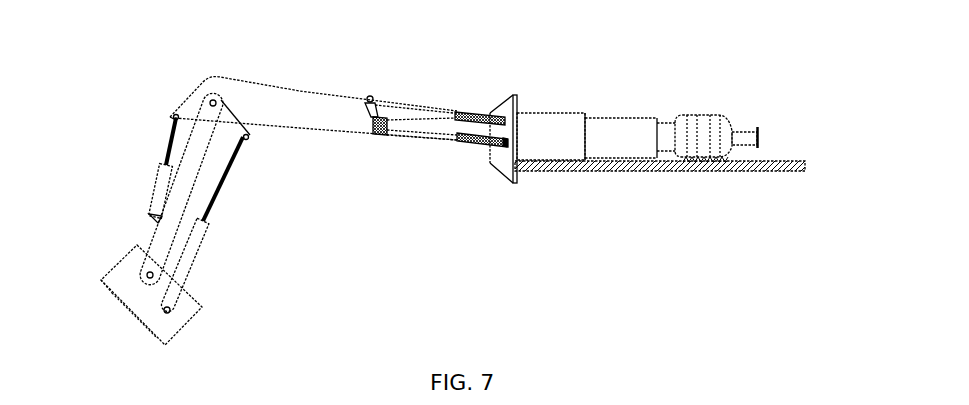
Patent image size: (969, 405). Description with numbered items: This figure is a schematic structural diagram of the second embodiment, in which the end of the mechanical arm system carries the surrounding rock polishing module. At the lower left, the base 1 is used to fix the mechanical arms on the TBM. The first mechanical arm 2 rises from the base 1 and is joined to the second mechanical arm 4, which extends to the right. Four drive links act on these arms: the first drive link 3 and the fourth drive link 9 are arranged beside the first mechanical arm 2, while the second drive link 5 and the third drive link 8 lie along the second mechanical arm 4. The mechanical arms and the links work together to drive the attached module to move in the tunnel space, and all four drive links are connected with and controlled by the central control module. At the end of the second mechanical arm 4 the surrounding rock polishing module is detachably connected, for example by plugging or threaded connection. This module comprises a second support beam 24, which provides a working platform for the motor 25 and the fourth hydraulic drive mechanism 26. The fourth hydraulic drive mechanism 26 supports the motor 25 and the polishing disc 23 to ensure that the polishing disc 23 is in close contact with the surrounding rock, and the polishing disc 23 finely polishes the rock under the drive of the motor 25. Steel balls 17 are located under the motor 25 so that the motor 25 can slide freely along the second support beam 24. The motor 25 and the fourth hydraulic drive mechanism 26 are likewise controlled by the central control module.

The base 1 is at (117, 282).
The first mechanical arm 2 is at (153, 242).
The first drive link 3 is at (167, 150).
The second mechanical arm 4 is at (292, 117).
The second drive link 5 is at (420, 105).
The third drive link 8 is at (413, 110).
The fourth drive link 9 is at (202, 242).
The steel balls 17 is at (703, 175).
The polishing disc 23 is at (758, 133).
The second support beam 24 is at (775, 175).
The motor 25 is at (750, 175).
The fourth hydraulic drive mechanism 26 is at (612, 137).